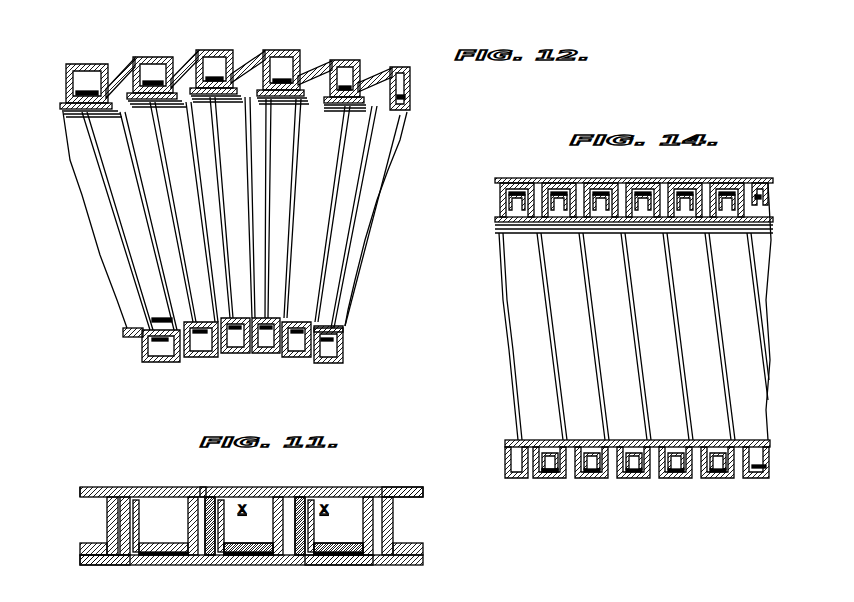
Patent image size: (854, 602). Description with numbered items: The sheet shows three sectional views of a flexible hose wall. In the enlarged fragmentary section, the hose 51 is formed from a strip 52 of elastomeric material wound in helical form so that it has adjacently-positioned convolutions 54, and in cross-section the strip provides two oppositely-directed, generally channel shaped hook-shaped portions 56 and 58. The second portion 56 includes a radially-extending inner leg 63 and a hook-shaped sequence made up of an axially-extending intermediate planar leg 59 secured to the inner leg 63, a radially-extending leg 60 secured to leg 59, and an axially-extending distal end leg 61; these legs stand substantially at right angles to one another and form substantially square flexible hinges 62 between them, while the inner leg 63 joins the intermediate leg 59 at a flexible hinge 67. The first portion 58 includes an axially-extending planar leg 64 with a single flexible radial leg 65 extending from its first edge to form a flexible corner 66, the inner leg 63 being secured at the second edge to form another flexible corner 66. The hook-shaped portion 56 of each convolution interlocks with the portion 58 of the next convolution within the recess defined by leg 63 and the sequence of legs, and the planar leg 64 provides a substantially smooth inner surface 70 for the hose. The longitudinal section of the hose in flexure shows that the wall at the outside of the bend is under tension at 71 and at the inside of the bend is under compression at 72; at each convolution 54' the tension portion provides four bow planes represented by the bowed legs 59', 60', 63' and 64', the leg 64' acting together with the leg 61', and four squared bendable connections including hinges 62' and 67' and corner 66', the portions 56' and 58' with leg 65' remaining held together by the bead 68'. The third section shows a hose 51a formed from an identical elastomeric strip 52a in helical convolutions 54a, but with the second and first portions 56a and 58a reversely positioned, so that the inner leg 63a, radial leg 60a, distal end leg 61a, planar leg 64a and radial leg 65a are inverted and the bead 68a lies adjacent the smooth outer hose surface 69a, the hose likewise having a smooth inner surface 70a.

In FIG. 12, the hose 51 is at (78, 30).
In FIG. 11, the hose 51 is at (92, 468).
In FIG. 11, the strip 52 is at (423, 558).
In FIG. 11, the convolutions 54 is at (251, 525).
In FIG. 11, the second portion 56 is at (161, 506).
In FIG. 11, the first portion 58 is at (105, 575).
In FIG. 11, the intermediate planar leg 59 is at (251, 478).
In FIG. 11, the radially-extending leg 60 is at (361, 526).
In FIG. 11, the distal end leg 61 is at (339, 575).
In FIG. 11, the flexible hinges 62 is at (375, 499).
In FIG. 11, the inner leg 63 is at (257, 553).
In FIG. 11, the planar leg 64 is at (252, 569).
In FIG. 11, the single flexible radial leg 65 is at (225, 526).
In FIG. 11, the flexible corner 66 is at (264, 546).
In FIG. 11, the flexible hinge 67 is at (246, 476).
In FIG. 12, the portion under tension 71 is at (178, 44).
In FIG. 12, the inner surface 70 is at (345, 320).
In FIG. 12, the portion under compression 72 is at (198, 364).
In FIG. 12, the convolution 54' is at (220, 213).
In FIG. 12, the second portion 56' is at (303, 201).
In FIG. 12, the first portion 58' is at (194, 205).
In FIG. 12, the bowed intermediate leg 59' is at (123, 215).
In FIG. 12, the bowed radial leg 60' is at (241, 57).
In FIG. 12, the distal end leg 61' is at (226, 197).
In FIG. 12, the hinges 62' is at (294, 91).
In FIG. 12, the bowed inner leg 63' is at (297, 208).
In FIG. 12, the bowed planar leg 64' is at (172, 223).
In FIG. 12, the radial leg 65' is at (385, 215).
In FIG. 12, the corner 66' is at (238, 220).
In FIG. 12, the hinge 67' is at (404, 82).
In FIG. 12, the sealing bead 68' is at (264, 223).
In FIG. 14, the hose 51a is at (737, 160).
In FIG. 14, the elastomeric strip 52a is at (500, 219).
In FIG. 14, the convolutions 54a is at (570, 342).
In FIG. 14, the second portion 56a is at (587, 450).
In FIG. 14, the first portion 58a is at (630, 180).
In FIG. 14, the radially-extending leg 60a is at (702, 480).
In FIG. 14, the distal end leg 61a is at (528, 196).
In FIG. 14, the inner leg 63a is at (756, 203).
In FIG. 14, the planar leg 64a is at (740, 182).
In FIG. 14, the radial leg 65a is at (548, 450).
In FIG. 14, the bead 68a is at (654, 182).
In FIG. 14, the outer hose surface 69a is at (765, 482).
In FIG. 14, the inner surface 70a is at (765, 441).